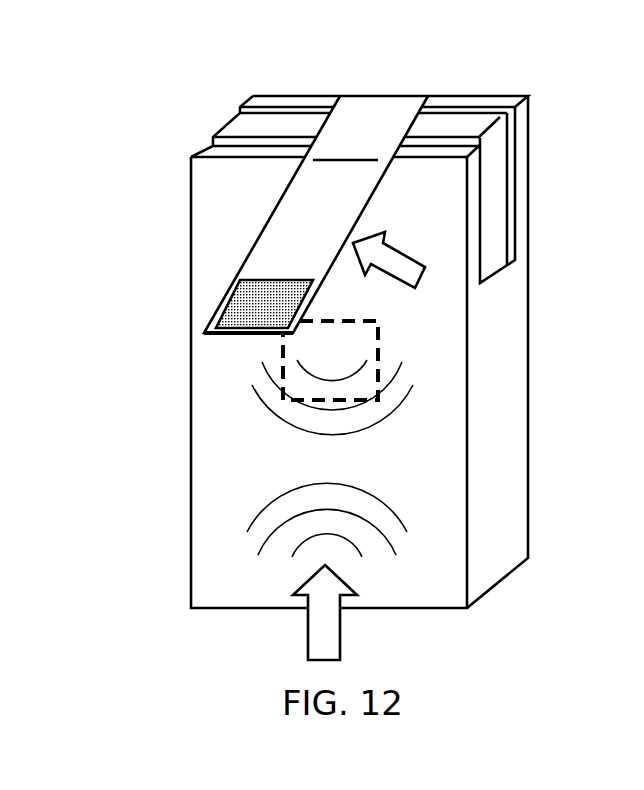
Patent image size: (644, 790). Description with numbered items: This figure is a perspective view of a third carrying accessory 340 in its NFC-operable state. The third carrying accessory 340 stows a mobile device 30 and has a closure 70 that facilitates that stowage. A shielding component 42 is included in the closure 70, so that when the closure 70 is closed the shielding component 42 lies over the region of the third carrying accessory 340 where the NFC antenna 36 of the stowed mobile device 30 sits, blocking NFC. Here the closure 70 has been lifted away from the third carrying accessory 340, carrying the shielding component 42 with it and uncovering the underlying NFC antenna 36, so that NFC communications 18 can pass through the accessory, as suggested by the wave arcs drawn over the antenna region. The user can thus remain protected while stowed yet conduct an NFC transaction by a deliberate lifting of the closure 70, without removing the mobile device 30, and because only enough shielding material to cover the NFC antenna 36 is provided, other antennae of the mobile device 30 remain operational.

The NFC communication 18 is at (372, 465).
The mobile device 30 is at (508, 183).
The NFC antenna 36 is at (378, 360).
The shielding component 42 is at (253, 308).
The closure 70 is at (312, 206).
The third carrying accessory 340 is at (495, 96).